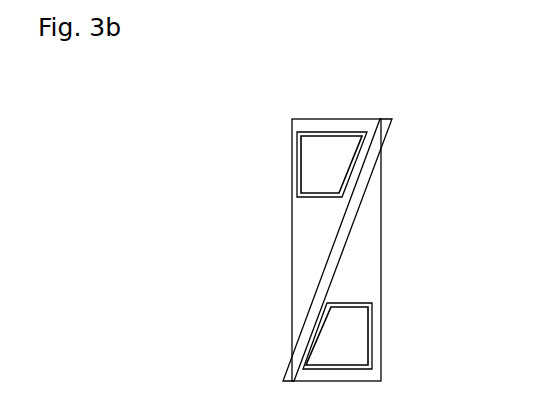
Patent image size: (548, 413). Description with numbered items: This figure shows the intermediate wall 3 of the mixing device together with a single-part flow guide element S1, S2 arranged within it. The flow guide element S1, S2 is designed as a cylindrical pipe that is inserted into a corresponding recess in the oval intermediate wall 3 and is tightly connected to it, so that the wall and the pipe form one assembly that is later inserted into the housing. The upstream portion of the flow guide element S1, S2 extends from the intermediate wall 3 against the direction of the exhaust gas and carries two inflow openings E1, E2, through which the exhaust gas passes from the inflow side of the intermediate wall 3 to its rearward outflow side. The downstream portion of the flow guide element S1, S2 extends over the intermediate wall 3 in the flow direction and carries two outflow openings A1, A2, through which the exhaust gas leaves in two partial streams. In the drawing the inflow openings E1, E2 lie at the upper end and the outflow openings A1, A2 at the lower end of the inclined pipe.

The intermediate wall 3 is at (362, 197).
The diagonal strut (first and second strut) S1, S2 is at (367, 248).
The inflow opening E1 is at (310, 153).
The inflow opening E2 is at (297, 178).
The outflow opening A1 is at (360, 338).
The outflow opening A2 is at (372, 308).